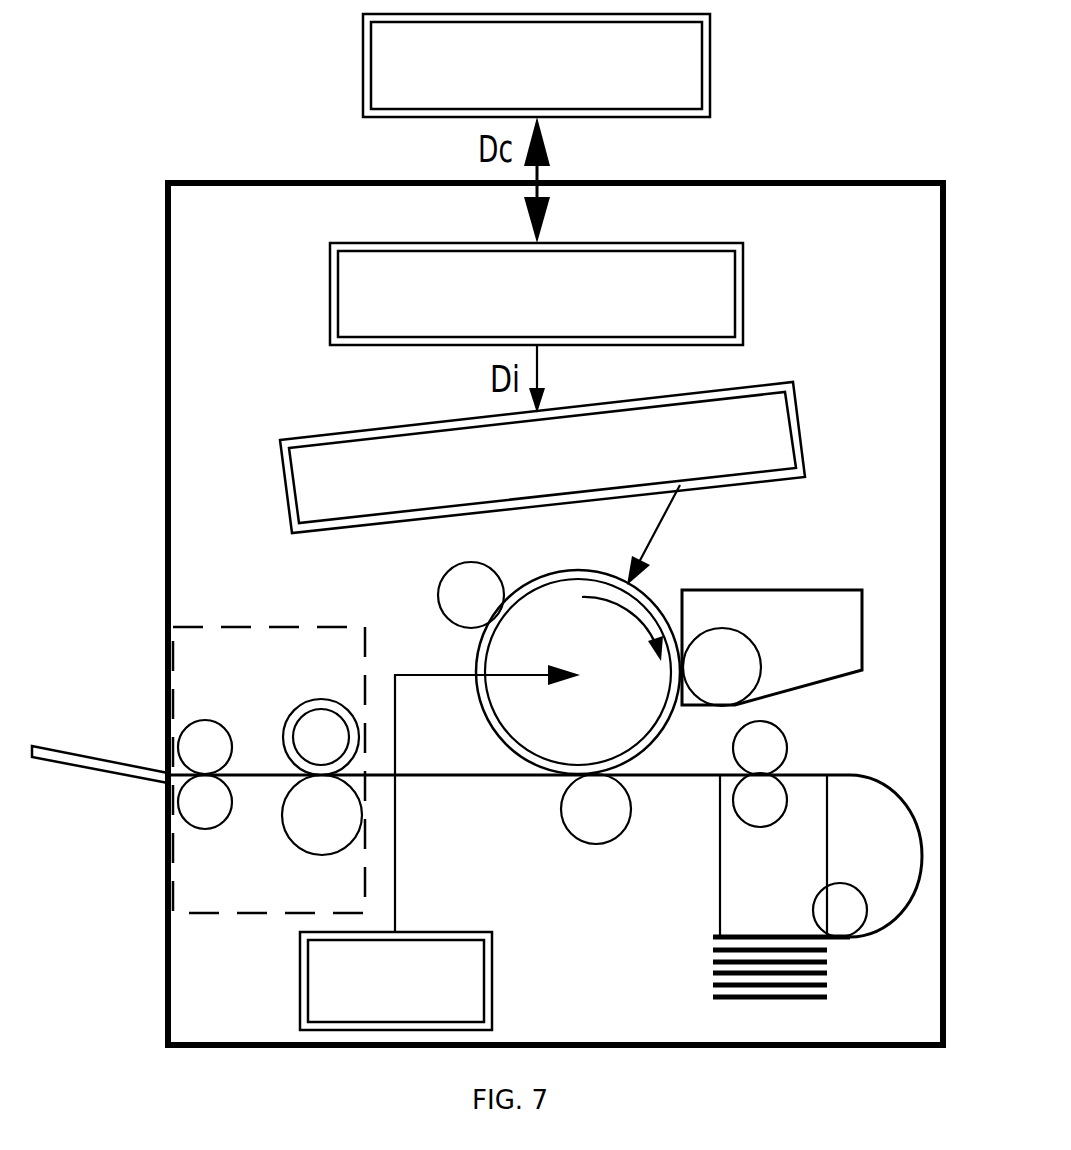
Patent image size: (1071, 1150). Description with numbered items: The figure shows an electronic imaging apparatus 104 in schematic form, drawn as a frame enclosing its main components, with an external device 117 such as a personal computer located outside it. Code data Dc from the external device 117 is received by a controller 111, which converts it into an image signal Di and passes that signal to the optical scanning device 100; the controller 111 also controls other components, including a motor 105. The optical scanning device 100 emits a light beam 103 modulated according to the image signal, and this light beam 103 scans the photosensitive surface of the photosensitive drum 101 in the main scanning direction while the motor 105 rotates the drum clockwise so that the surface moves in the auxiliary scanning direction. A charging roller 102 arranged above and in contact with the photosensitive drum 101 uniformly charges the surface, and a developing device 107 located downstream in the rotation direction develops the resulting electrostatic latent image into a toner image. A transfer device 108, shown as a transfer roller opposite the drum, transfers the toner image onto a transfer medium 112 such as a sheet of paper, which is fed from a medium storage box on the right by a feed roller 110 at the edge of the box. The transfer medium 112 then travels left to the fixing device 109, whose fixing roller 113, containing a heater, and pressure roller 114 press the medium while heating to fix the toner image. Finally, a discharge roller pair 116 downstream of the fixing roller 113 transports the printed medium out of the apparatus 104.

The optical scanning device 100 is at (797, 402).
The photosensitive drum 101 is at (503, 716).
The charging roller 102 is at (446, 572).
The light beam 103 is at (655, 538).
The electronic imaging apparatus 104 is at (870, 181).
The motor 105 is at (300, 960).
The developing device 107 is at (863, 625).
The transfer device 108 is at (597, 845).
The fixing device 109 is at (275, 627).
The feed roller 110 is at (842, 886).
The controller 111 is at (743, 265).
The transfer medium 112 is at (450, 777).
The fixing roller 113 is at (310, 720).
The pressure roller 114 is at (292, 826).
The discharge roller pair 116 is at (205, 730).
The external device 117 is at (712, 40).